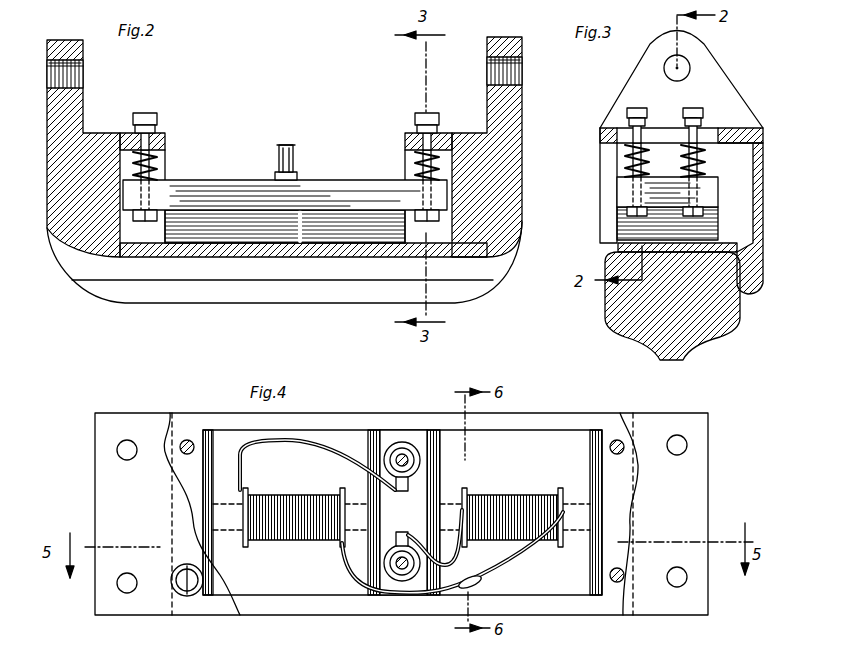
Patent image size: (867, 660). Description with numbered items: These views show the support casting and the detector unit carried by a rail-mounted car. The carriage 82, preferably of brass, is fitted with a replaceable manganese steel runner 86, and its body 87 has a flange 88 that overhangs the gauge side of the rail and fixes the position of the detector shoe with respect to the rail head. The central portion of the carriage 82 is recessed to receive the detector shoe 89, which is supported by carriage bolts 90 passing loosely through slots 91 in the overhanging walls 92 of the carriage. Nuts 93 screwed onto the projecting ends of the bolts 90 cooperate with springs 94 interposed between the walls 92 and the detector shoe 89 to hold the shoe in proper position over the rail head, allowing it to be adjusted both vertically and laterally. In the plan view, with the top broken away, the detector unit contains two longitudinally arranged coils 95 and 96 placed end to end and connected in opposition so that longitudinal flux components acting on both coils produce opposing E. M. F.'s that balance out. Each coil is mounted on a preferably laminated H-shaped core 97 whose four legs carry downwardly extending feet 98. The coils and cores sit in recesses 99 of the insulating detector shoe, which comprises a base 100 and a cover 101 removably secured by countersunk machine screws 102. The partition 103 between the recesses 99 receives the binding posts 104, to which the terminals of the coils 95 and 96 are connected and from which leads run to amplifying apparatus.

In FIG. 2, the carriage 82 is at (46, 210).
In FIG. 2, the runner 86 is at (158, 257).
In FIG. 3, the runner 86 is at (703, 242).
In FIG. 2, the body 87 is at (513, 161).
In FIG. 3, the body 87 is at (766, 183).
In FIG. 2, the flange 88 is at (332, 304).
In FIG. 3, the flange 88 is at (753, 295).
In FIG. 2, the detector shoe 89 is at (258, 178).
In FIG. 2, the carriage bolts 90 is at (148, 112).
In FIG. 3, the carriage bolts 90 is at (690, 107).
In FIG. 2, the slots 91 is at (134, 145).
In FIG. 3, the slots 91 is at (713, 132).
In FIG. 2, the overhanging walls 92 is at (165, 137).
In FIG. 2, the nuts 93 is at (158, 124).
In FIG. 3, the nuts 93 is at (685, 117).
In FIG. 2, the springs 94 is at (160, 160).
In FIG. 3, the springs 94 is at (681, 160).
In FIG. 4, the coil 95 is at (300, 541).
In FIG. 4, the coil 96 is at (509, 488).
In FIG. 4, the H-shaped core 97 is at (218, 549).
In FIG. 4, the feet 98 is at (220, 447).
In FIG. 4, the recesses 99 is at (322, 592).
In FIG. 2, the base 100 is at (262, 235).
In FIG. 3, the base 100 is at (620, 226).
In FIG. 4, the base 100 is at (293, 608).
In FIG. 2, the cover 101 is at (330, 175).
In FIG. 3, the cover 101 is at (622, 191).
In FIG. 4, the cover 101 is at (130, 608).
In FIG. 4, the countersunk machine screws 102 is at (190, 440).
In FIG. 4, the partition 103 is at (416, 437).
In FIG. 2, the binding posts 104 is at (297, 147).
In FIG. 4, the binding posts 104 is at (400, 452).